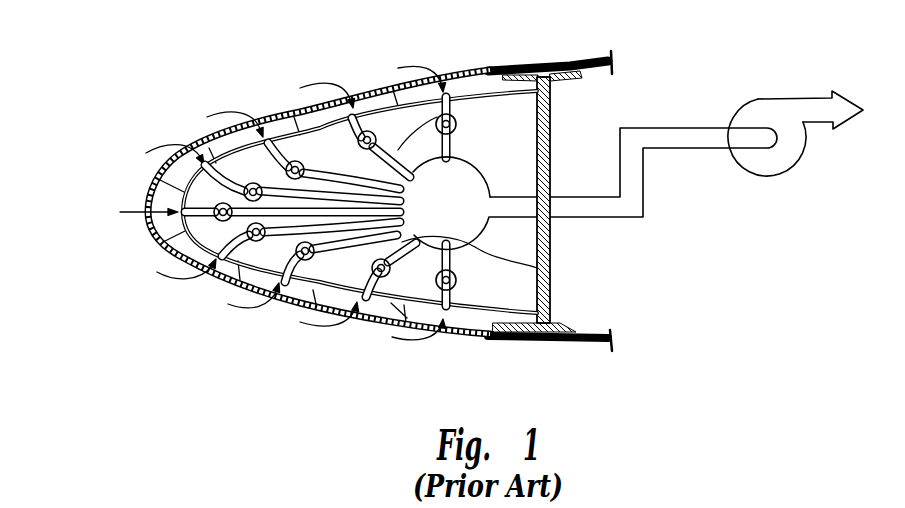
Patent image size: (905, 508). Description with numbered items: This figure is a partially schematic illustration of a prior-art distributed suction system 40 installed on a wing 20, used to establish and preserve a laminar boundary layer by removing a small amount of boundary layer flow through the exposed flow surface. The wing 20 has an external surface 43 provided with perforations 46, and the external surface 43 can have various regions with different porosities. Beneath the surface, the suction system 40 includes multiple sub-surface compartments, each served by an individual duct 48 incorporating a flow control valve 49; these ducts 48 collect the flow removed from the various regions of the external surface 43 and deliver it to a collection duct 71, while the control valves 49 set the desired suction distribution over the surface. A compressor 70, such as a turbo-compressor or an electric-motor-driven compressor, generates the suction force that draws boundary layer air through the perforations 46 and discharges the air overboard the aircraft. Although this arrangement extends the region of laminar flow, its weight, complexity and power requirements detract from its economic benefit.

The wing 20 is at (95, 156).
The suction system 40 is at (116, 234).
The external surface 43 is at (368, 92).
The perforations 46 is at (300, 104).
The ducts 48 is at (456, 137).
The flow control valves 49 is at (460, 278).
The compressor 70 is at (772, 177).
The collection duct 71 is at (488, 168).